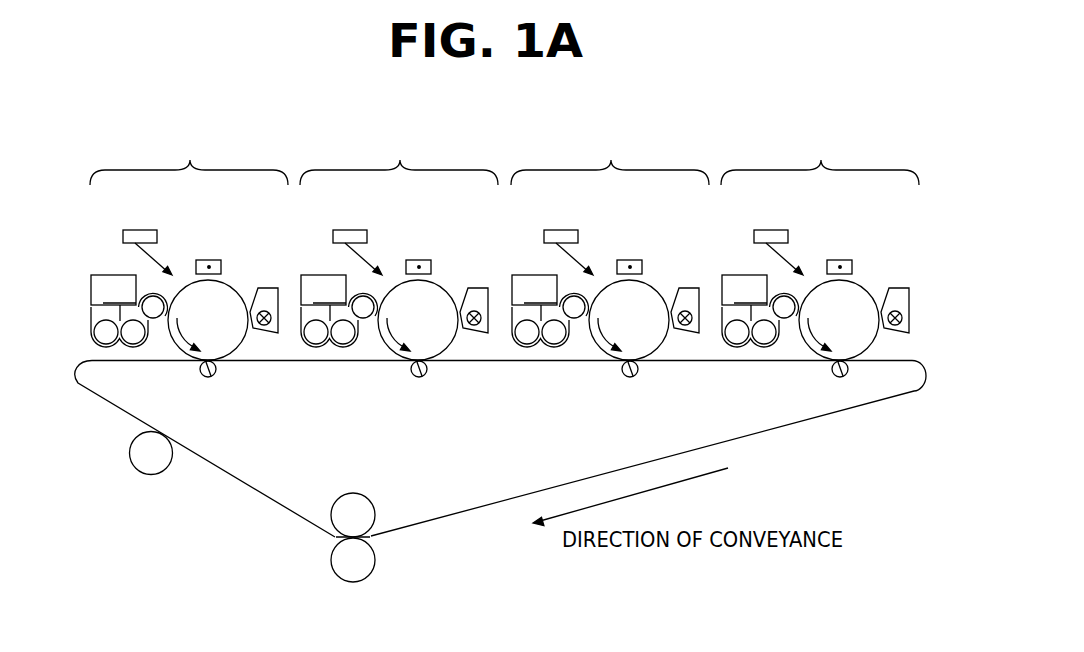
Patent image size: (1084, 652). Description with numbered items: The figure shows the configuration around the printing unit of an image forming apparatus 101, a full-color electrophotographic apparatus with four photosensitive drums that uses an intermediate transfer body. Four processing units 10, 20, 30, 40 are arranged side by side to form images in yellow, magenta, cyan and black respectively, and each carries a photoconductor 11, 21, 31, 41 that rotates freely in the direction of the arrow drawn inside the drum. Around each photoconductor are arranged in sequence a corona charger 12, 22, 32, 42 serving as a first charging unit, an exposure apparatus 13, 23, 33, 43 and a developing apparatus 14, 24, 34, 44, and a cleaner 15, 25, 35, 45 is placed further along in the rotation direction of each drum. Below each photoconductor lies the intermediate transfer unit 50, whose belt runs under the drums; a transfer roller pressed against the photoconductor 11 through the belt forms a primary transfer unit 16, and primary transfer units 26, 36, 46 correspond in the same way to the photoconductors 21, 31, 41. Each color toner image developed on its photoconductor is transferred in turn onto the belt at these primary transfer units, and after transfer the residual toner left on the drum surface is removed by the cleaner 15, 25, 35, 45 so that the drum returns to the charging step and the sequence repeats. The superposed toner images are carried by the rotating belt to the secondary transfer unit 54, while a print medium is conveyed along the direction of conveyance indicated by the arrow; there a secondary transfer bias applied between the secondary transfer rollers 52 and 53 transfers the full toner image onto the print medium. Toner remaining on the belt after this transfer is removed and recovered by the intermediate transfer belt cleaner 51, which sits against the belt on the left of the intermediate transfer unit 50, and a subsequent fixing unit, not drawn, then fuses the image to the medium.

The image forming apparatus 101 is at (720, 125).
The processing unit 10 is at (189, 154).
The photoconductor 11 is at (245, 333).
The corona charger 12 is at (209, 260).
The exposure apparatus 13 is at (141, 229).
The developing apparatus 14 is at (107, 274).
The cleaner 15 is at (272, 287).
The primary transfer unit 16 is at (210, 378).
The processing unit 20 is at (399, 154).
The photoconductor 21 is at (455, 333).
The corona charger 22 is at (419, 260).
The exposure apparatus 23 is at (351, 229).
The developing apparatus 24 is at (317, 274).
The cleaner 25 is at (482, 287).
The primary transfer unit 26 is at (421, 378).
The processing unit 30 is at (610, 154).
The photoconductor 31 is at (666, 333).
The corona charger 32 is at (630, 260).
The exposure apparatus 33 is at (562, 229).
The developing apparatus 34 is at (528, 274).
The cleaner 35 is at (693, 287).
The primary transfer unit 36 is at (633, 377).
The processing unit 40 is at (820, 154).
The photoconductor 41 is at (876, 333).
The corona charger 42 is at (840, 260).
The exposure apparatus 43 is at (772, 229).
The developing apparatus 44 is at (738, 274).
The cleaner 45 is at (903, 287).
The primary transfer unit 46 is at (845, 377).
The intermediate transfer unit 50 is at (583, 468).
The intermediate transfer belt cleaner 51 is at (130, 453).
The secondary transfer roller 52 is at (350, 494).
The secondary transfer roller 53 is at (372, 570).
The secondary transfer unit 54 is at (354, 536).